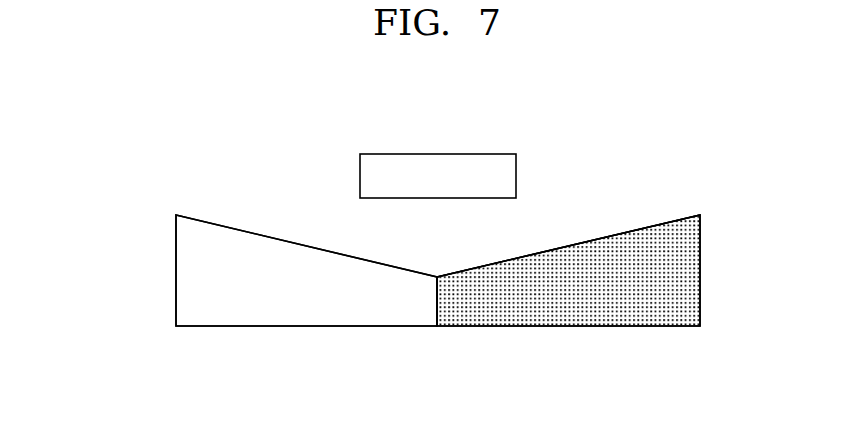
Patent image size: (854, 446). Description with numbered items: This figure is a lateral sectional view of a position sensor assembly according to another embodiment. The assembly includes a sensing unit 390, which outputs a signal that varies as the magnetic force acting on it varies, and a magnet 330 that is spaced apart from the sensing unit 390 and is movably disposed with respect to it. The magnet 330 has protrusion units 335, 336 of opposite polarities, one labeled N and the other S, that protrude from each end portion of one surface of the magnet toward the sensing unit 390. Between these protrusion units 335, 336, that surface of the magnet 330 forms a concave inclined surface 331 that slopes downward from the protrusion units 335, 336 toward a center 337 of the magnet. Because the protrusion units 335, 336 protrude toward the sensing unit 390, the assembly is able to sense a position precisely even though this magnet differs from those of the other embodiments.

The magnet 330 is at (142, 268).
The concave inclined surface 331 is at (578, 248).
The protrusion unit 335 is at (177, 213).
The protrusion unit 336 is at (700, 215).
The center 337 is at (437, 277).
The sensing unit 390 is at (478, 153).